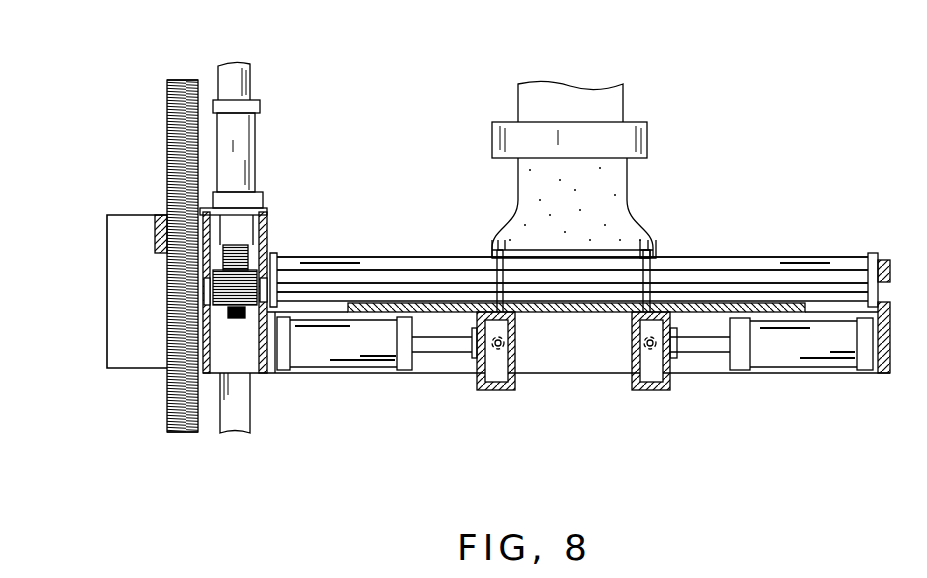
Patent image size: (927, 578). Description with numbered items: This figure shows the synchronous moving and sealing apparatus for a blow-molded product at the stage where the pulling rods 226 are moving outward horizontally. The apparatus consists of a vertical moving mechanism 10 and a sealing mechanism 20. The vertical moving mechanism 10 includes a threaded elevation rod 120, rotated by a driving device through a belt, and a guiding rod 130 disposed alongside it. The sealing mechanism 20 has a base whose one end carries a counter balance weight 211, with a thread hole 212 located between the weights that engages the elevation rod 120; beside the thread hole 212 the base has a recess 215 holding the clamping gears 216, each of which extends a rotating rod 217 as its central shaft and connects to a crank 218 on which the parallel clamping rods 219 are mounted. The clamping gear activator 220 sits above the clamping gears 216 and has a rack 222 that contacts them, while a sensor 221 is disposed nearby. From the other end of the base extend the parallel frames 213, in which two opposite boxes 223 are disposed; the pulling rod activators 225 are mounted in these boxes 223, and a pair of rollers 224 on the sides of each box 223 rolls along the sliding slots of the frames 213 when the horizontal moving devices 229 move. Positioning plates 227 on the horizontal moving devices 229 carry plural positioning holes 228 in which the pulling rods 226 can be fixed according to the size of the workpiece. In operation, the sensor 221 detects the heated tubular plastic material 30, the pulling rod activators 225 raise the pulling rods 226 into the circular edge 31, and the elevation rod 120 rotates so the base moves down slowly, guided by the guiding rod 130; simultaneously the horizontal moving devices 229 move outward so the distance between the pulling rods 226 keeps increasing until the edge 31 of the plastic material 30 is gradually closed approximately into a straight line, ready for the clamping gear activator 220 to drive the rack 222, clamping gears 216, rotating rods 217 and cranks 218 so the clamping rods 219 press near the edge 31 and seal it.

The vertical moving mechanism 10 is at (78, 358).
The sealing mechanism 20 is at (393, 226).
The tubular plastic material 30 is at (600, 170).
The circular edge 31 is at (662, 256).
The elevation rod 120 is at (170, 137).
The guiding rods 130 is at (241, 408).
The counter balance weights 211 is at (123, 280).
The thread hole 212 is at (175, 222).
The parallel frames 213 is at (440, 360).
The recess 215 is at (230, 358).
The clamping gears 216 is at (205, 335).
The rotating rod 217 is at (782, 293).
The crank 218 is at (848, 262).
The clamping rods 219 is at (820, 262).
The clamping gear activator 220 is at (245, 110).
The sensor 221 is at (265, 197).
The rack 222 is at (238, 245).
The boxes 223 is at (490, 392).
The rollers 224 is at (640, 345).
The pulling rod activators 225 is at (517, 353).
The pulling rods 226 is at (497, 262).
The positioning plates 227 is at (780, 320).
The positioning holes 228 is at (712, 300).
The horizontal moving devices 229 is at (338, 348).